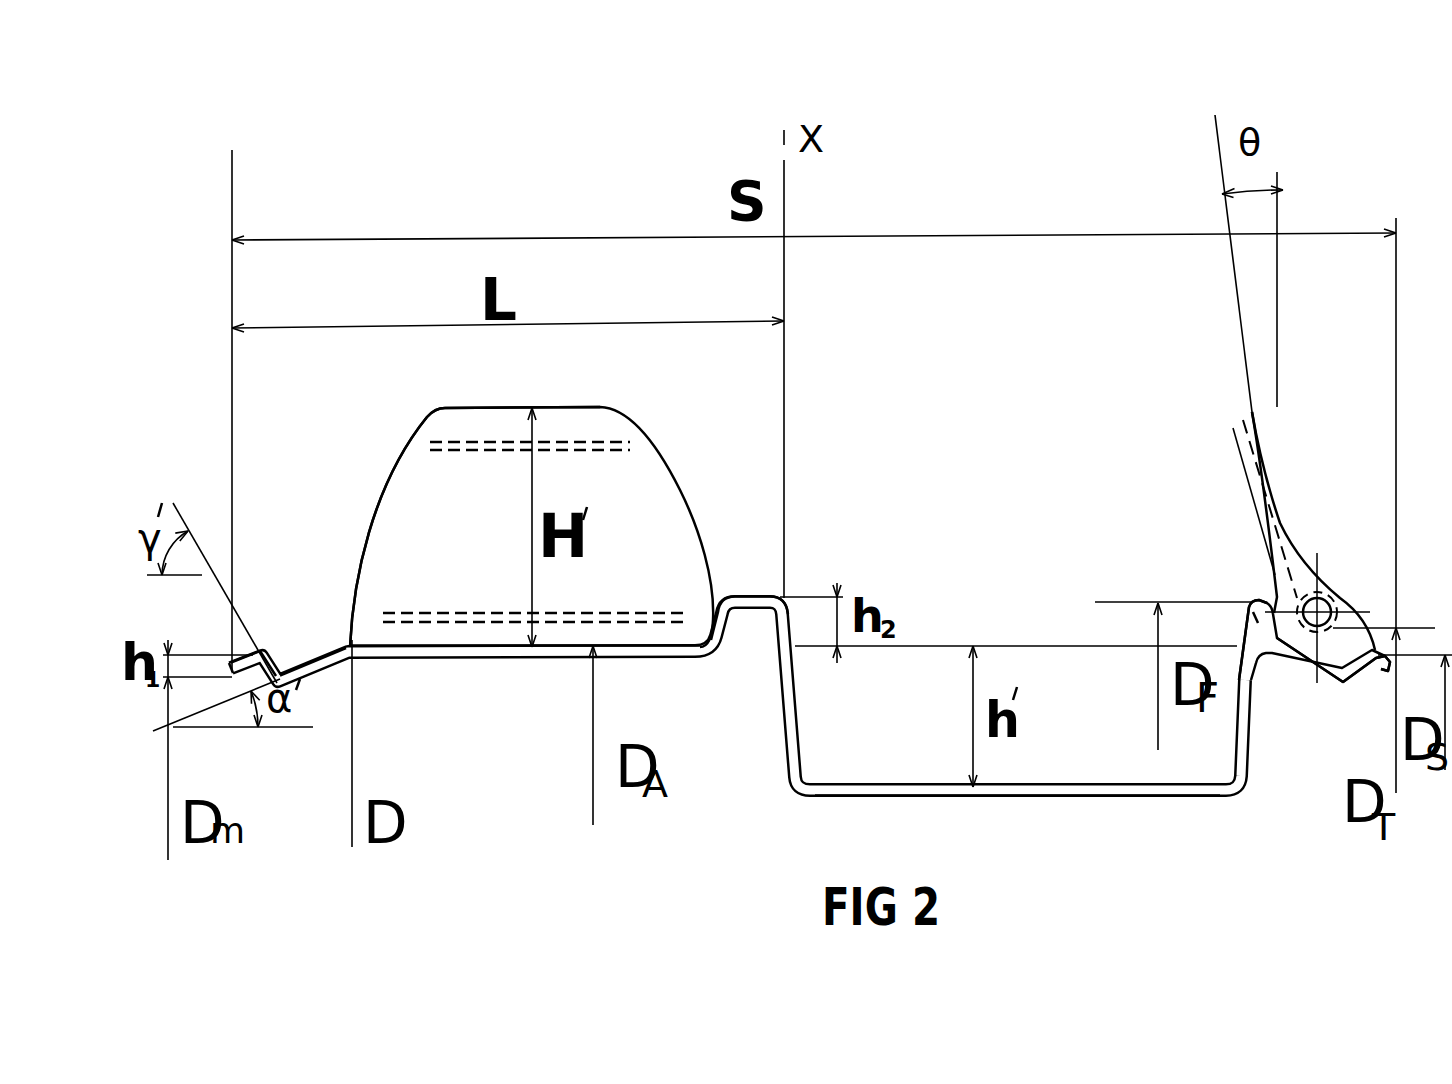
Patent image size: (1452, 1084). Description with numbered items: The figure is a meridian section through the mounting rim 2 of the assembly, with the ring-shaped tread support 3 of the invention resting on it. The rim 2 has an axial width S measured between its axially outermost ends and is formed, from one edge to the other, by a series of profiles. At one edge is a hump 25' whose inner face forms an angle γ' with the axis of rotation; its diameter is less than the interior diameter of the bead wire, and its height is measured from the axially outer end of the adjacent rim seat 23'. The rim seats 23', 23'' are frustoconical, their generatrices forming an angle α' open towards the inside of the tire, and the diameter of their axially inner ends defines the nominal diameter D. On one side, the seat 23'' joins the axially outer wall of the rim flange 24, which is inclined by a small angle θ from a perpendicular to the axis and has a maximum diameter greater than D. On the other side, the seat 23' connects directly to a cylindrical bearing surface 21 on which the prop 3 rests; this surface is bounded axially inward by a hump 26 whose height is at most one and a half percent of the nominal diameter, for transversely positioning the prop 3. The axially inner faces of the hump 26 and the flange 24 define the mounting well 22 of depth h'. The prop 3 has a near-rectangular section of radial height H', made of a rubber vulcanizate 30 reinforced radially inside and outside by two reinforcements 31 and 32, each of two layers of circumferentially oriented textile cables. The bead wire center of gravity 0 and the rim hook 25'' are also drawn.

The rim 2 is at (833, 753).
The cylindrical bearing surface 21 is at (472, 657).
The mounting well 22 is at (1042, 762).
The rim seat 23' is at (313, 732).
The hump 25' is at (282, 599).
The hump 26 is at (758, 607).
The rim flange 24 is at (1252, 600).
The rim seat 23'' is at (1305, 716).
The rim hook (second side) 25'' is at (1367, 715).
The tread support 3 is at (630, 510).
The rubber vulcanizate 30 is at (430, 533).
The reinforcement 31 is at (583, 433).
The reinforcement 32 is at (457, 620).
The bead wire center 0 is at (1322, 597).